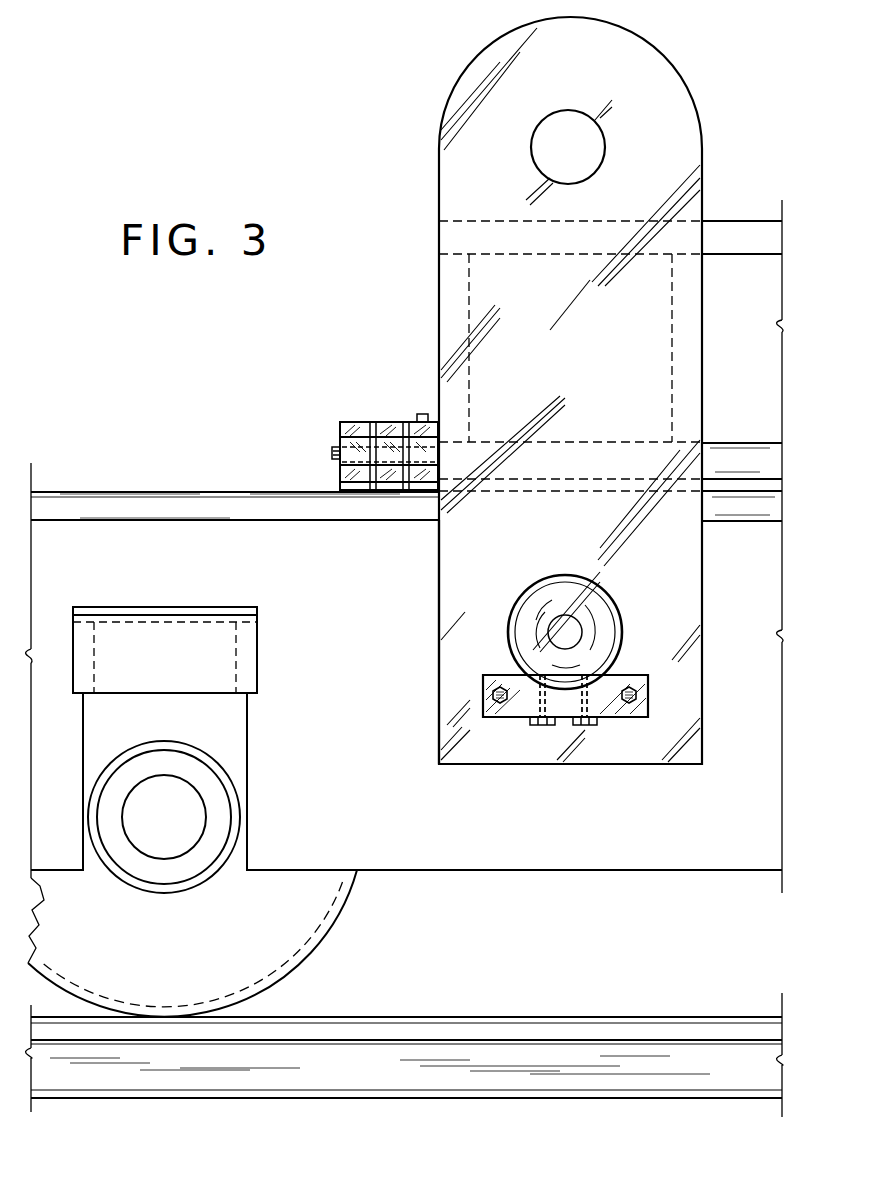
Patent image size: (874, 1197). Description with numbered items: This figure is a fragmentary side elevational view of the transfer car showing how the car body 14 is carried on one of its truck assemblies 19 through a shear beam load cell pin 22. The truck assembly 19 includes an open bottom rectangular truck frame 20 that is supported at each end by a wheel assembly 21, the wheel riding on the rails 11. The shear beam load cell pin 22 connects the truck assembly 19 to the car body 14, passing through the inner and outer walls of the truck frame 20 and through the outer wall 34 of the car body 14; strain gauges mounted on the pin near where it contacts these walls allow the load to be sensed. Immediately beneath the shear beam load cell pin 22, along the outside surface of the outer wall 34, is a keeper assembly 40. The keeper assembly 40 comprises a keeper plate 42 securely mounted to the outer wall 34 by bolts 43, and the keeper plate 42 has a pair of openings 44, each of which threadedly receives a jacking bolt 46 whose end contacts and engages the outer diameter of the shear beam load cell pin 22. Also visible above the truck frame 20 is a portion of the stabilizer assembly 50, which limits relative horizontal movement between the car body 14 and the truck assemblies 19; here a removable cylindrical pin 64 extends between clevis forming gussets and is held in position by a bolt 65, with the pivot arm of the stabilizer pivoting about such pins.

The rails 11 is at (398, 1017).
The car body 14 is at (731, 221).
The truck assembly 19 is at (179, 492).
The truck frame 20 is at (325, 662).
The wheel assembly 21 is at (327, 946).
The shear beam load cell pin 22 is at (526, 598).
The outer wall 34 is at (483, 372).
The keeper assembly 40 is at (649, 697).
The keeper plate 42 is at (613, 687).
The bolts 43 is at (493, 694).
The openings 44 is at (538, 703).
The jacking bolt 46 is at (546, 726).
The stabilizer assembly 50 is at (358, 422).
The cylindrical pin 64 is at (332, 453).
The bolt 65 is at (423, 414).